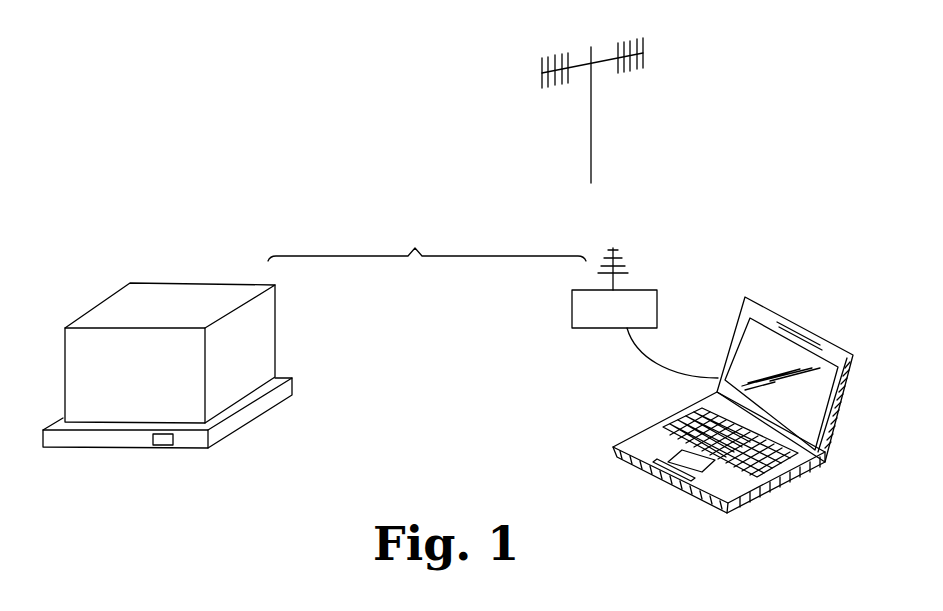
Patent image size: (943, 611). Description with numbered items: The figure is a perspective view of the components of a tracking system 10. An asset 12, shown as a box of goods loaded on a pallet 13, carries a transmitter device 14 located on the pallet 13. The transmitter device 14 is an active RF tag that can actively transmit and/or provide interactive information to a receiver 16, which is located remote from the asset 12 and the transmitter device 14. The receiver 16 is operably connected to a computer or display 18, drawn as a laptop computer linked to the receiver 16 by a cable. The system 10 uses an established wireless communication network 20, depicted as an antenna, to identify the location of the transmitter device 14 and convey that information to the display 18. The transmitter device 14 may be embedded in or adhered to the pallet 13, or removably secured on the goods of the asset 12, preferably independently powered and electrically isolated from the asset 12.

The system 10 is at (379, 226).
The asset 12 is at (173, 308).
The pallet 13 is at (260, 407).
The transmitter device 14 is at (165, 448).
The receiver 16 is at (643, 293).
The computer or display 18 is at (803, 322).
The wireless communication network 20 is at (628, 80).